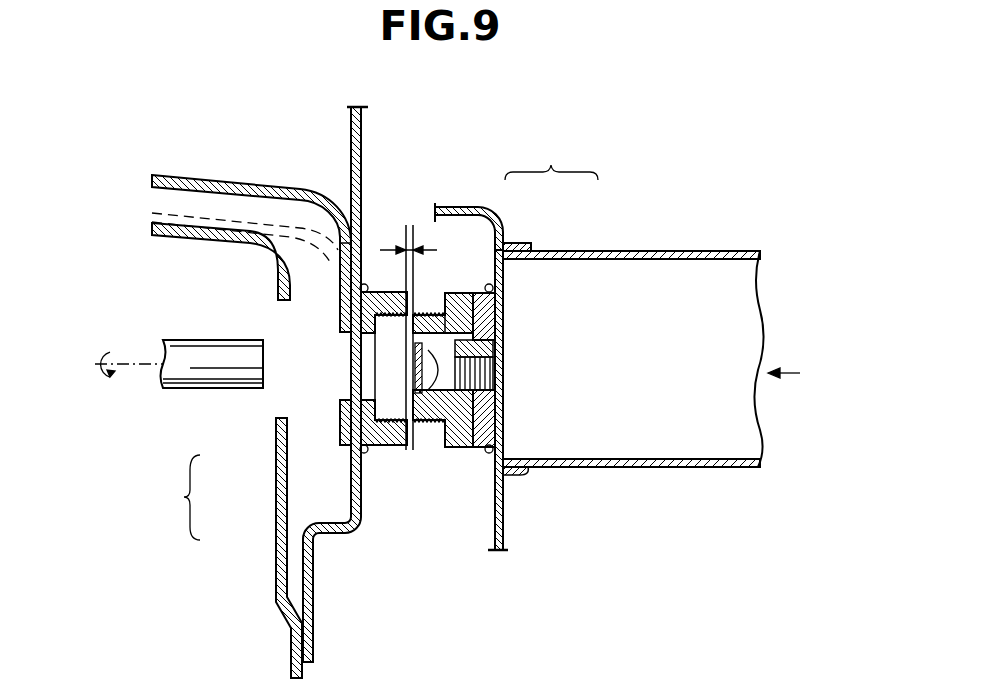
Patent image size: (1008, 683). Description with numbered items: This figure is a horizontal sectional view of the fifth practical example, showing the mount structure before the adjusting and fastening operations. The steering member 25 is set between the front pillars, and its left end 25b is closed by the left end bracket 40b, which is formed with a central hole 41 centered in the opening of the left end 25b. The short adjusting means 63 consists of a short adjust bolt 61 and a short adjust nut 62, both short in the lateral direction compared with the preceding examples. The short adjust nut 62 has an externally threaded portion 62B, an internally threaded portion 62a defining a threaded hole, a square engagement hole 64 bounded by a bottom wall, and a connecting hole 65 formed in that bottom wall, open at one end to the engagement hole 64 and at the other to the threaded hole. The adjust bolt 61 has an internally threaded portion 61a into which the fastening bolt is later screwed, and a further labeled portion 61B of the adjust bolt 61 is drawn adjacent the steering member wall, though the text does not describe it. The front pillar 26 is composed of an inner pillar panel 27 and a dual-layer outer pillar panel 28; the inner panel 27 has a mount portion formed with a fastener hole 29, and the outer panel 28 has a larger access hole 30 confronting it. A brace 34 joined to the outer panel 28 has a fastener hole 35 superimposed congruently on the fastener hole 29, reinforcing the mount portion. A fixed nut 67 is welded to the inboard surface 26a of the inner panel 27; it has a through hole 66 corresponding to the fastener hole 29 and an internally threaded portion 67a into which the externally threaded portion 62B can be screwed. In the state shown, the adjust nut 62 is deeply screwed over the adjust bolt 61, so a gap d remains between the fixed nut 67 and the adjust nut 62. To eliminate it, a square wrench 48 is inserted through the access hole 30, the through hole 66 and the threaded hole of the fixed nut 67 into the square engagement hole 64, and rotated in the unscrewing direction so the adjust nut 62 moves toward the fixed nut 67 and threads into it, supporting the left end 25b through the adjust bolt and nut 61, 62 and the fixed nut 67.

The steering member 25 is at (671, 359).
The left end of the steering member 25b is at (572, 469).
The front pillar 26 is at (166, 497).
The inner surface of the front pillar 26a is at (360, 218).
The inner pillar panel 27 is at (337, 504).
The outer pillar panel 28 is at (276, 478).
The fastener hole 29 is at (355, 398).
The access hole 30 is at (281, 410).
The brace 34 is at (245, 183).
The fastener hole of the brace 35 is at (345, 332).
The left end bracket 40b is at (504, 527).
The central hole 41 is at (500, 342).
The square wrench 48 is at (207, 340).
The short adjust bolt 61 is at (515, 245).
The internally threaded portion of the adjust bolt 61a is at (497, 372).
The flange 61B is at (500, 415).
The short adjust nut 62 is at (466, 298).
The internally threaded portion of the adjust nut 62a is at (500, 318).
The externally threaded portion of the adjust nut 62B is at (428, 318).
The short adjusting means 63 is at (551, 160).
The square engagement hole 64 is at (413, 452).
The connecting hole 65 is at (453, 447).
The through hole 66 is at (367, 335).
The fixed nut 67 is at (383, 447).
The internally threaded portion of the fixed nut 67a is at (383, 338).
The gap d is at (411, 248).